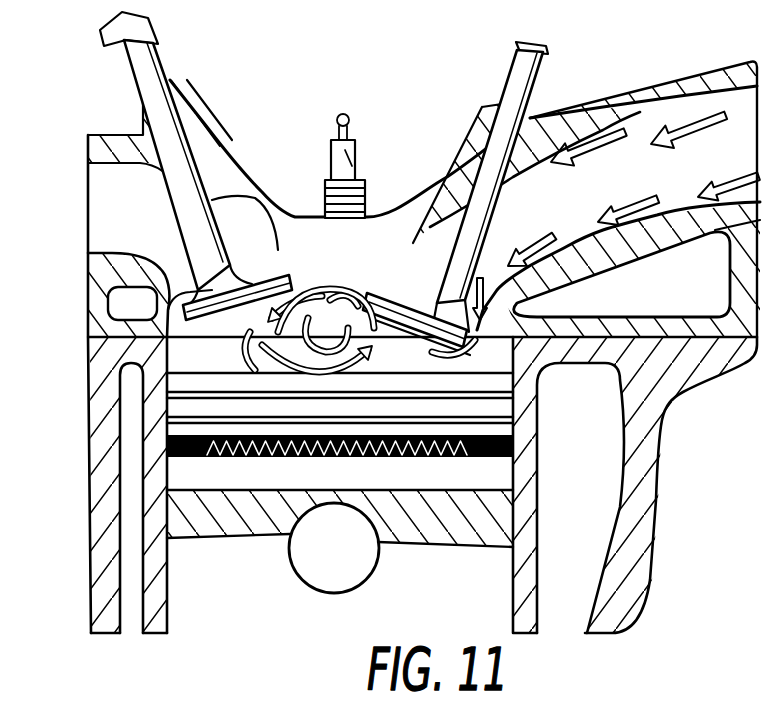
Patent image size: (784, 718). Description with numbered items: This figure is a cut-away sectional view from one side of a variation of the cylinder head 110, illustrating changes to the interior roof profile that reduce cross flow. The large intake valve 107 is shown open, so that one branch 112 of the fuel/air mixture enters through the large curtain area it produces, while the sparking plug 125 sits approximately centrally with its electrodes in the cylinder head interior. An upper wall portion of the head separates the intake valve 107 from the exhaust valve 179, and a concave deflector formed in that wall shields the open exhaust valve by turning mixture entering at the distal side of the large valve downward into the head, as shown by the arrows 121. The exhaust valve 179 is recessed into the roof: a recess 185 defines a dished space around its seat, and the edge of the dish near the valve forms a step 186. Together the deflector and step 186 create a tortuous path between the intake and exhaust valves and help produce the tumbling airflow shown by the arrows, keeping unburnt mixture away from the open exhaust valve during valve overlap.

The large intake valve 107 is at (420, 248).
The cylinder head 110 is at (560, 488).
The branch of mixture 112 is at (595, 180).
The arrows showing mixture flow 121 is at (297, 353).
The sparking plug 125 is at (350, 168).
The exhaust valve 179 is at (176, 258).
The recess 185 is at (290, 228).
The step 186 is at (340, 235).